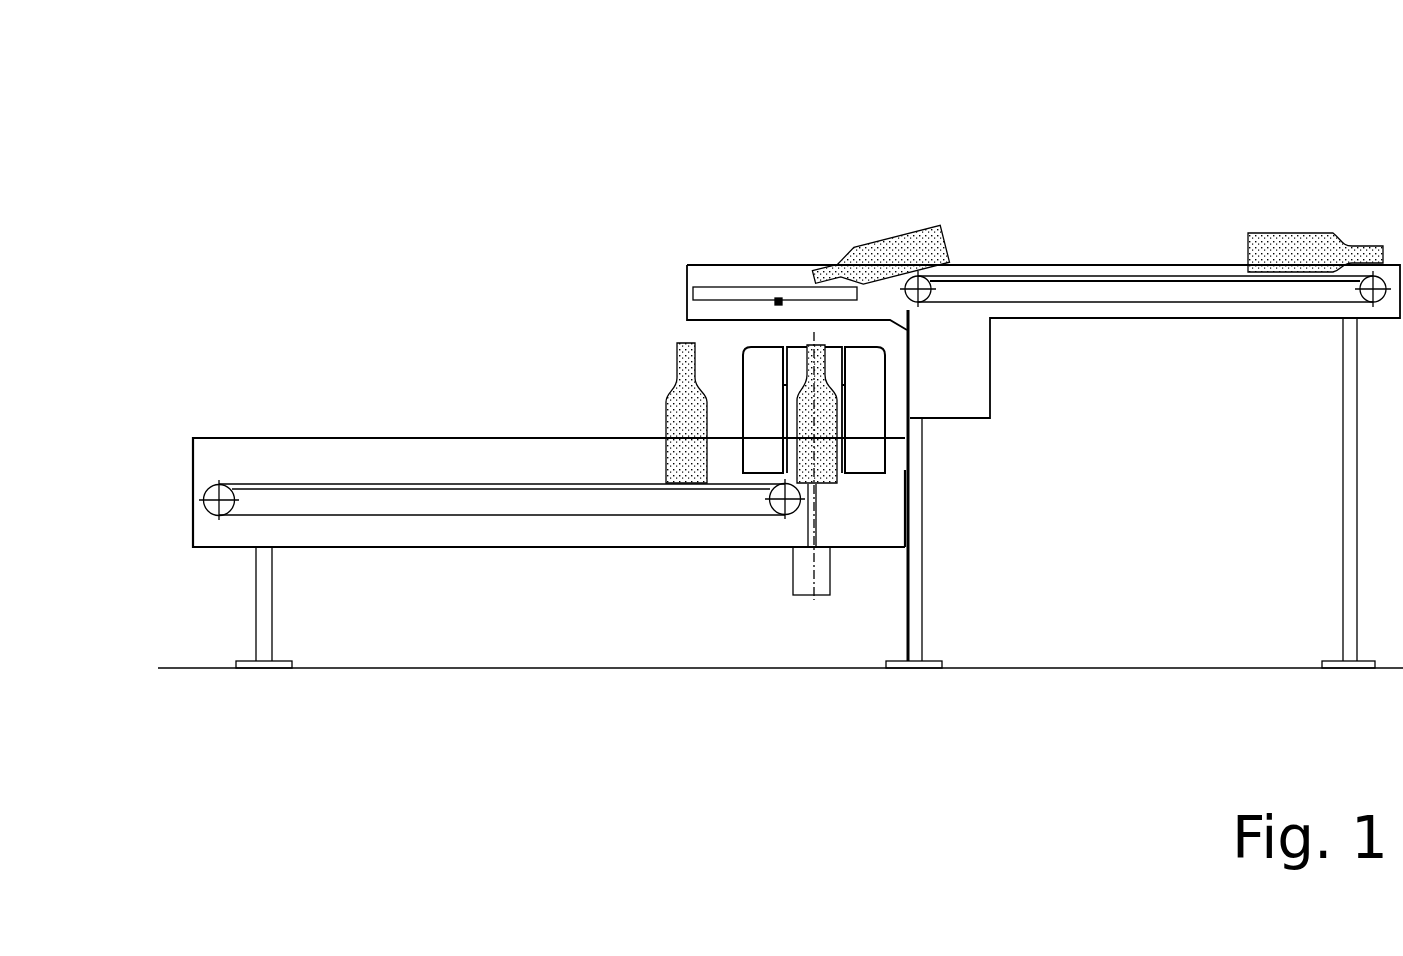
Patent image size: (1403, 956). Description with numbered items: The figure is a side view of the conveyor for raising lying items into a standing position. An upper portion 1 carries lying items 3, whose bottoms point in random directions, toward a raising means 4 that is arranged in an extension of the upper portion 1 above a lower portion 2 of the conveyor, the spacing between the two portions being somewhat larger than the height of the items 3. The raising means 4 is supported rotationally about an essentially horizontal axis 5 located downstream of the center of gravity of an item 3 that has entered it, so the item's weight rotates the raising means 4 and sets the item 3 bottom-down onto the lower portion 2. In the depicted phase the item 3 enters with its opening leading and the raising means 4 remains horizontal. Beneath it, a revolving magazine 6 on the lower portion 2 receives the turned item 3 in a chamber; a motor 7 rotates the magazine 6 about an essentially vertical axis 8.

The upper portion 1 is at (1107, 268).
The lower portion 2 is at (369, 482).
The item 3 is at (903, 252).
The raising means 4 is at (725, 286).
The horizontal axis 5 is at (791, 296).
The revolving magazine 6 is at (913, 388).
The motor 7 is at (910, 567).
The vertical axis 8 is at (917, 507).